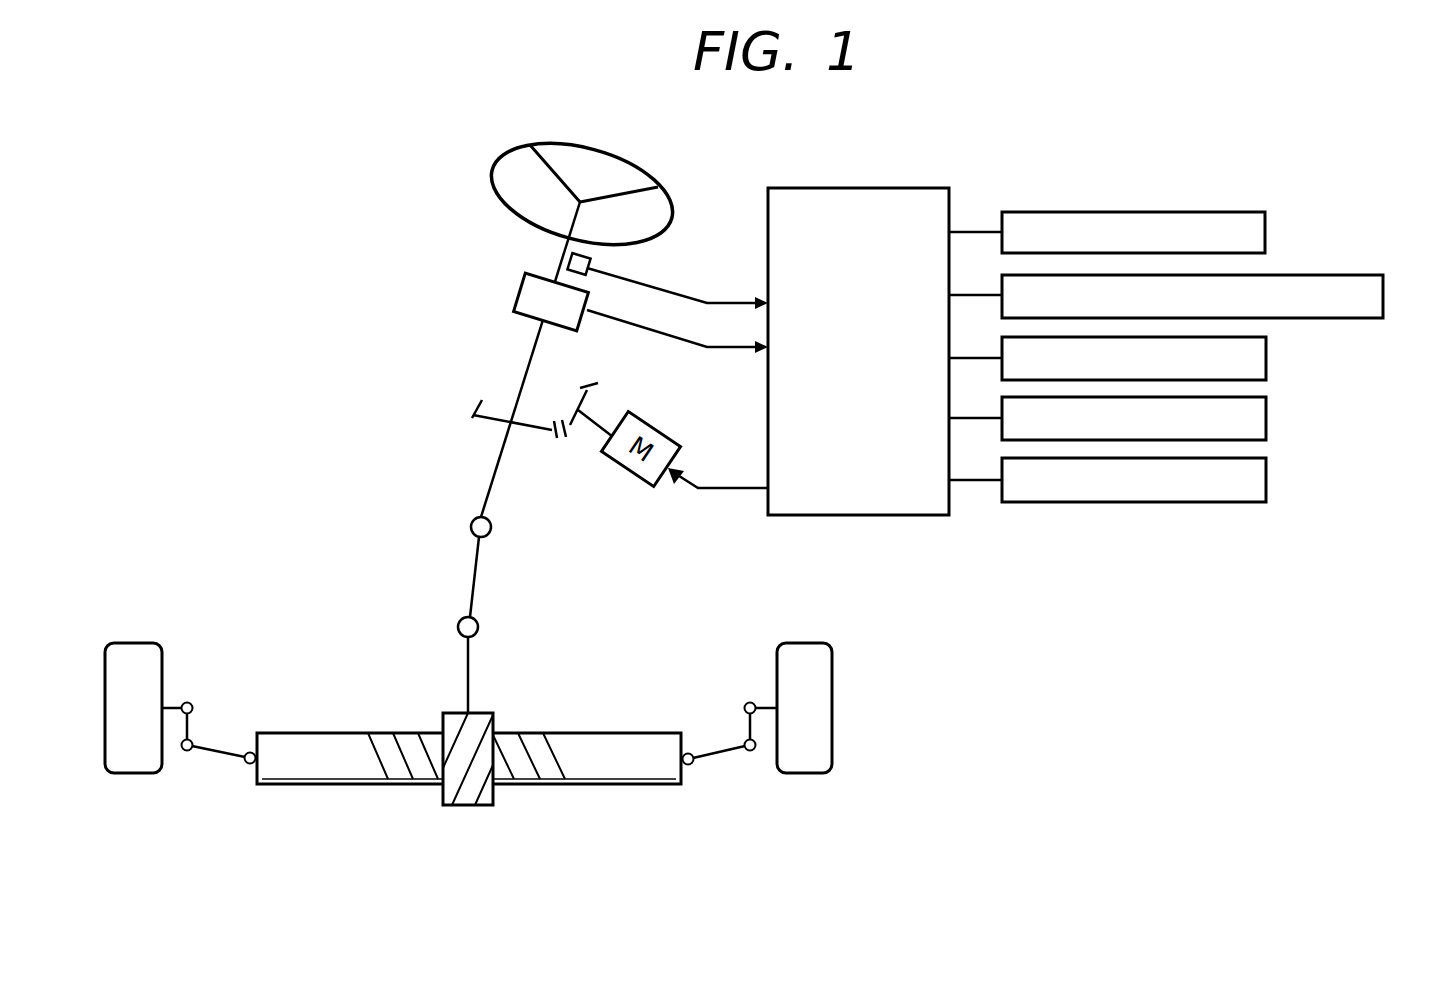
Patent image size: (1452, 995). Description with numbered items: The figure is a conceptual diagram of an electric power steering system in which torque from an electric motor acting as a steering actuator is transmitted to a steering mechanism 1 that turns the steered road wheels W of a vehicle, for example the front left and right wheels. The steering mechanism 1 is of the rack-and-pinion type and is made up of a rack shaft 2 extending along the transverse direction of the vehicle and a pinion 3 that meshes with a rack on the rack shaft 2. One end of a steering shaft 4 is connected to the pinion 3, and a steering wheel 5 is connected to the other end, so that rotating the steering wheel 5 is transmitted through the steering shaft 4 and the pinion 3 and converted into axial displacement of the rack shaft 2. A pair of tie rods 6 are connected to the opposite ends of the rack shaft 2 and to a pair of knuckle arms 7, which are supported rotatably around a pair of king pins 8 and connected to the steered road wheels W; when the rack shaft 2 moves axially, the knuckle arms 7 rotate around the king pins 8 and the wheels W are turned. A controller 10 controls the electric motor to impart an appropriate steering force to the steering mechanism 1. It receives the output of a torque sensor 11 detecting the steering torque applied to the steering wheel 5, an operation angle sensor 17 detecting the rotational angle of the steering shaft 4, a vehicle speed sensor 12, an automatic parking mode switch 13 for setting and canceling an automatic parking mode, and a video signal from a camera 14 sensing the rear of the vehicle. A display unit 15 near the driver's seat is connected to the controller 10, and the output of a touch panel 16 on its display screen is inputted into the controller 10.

The steering mechanism 1 is at (578, 818).
The rack shaft 2 is at (335, 786).
The pinion 3 is at (468, 806).
The steering shaft 4 is at (528, 362).
The steering wheel 5 is at (611, 145).
The tie rods 6 is at (216, 758).
The knuckle arms 7 is at (200, 722).
The king pins 8 is at (189, 702).
The controller 10 is at (894, 188).
The torque sensor 11 is at (514, 292).
The vehicle speed sensor 12 is at (1267, 222).
The automatic parking mode switch 13 is at (1385, 287).
The camera 14 is at (1268, 355).
The display unit 15 is at (1268, 412).
The touch panel 16 is at (1268, 473).
The operation angle sensor 17 is at (566, 258).
The steered road wheels W is at (140, 643).